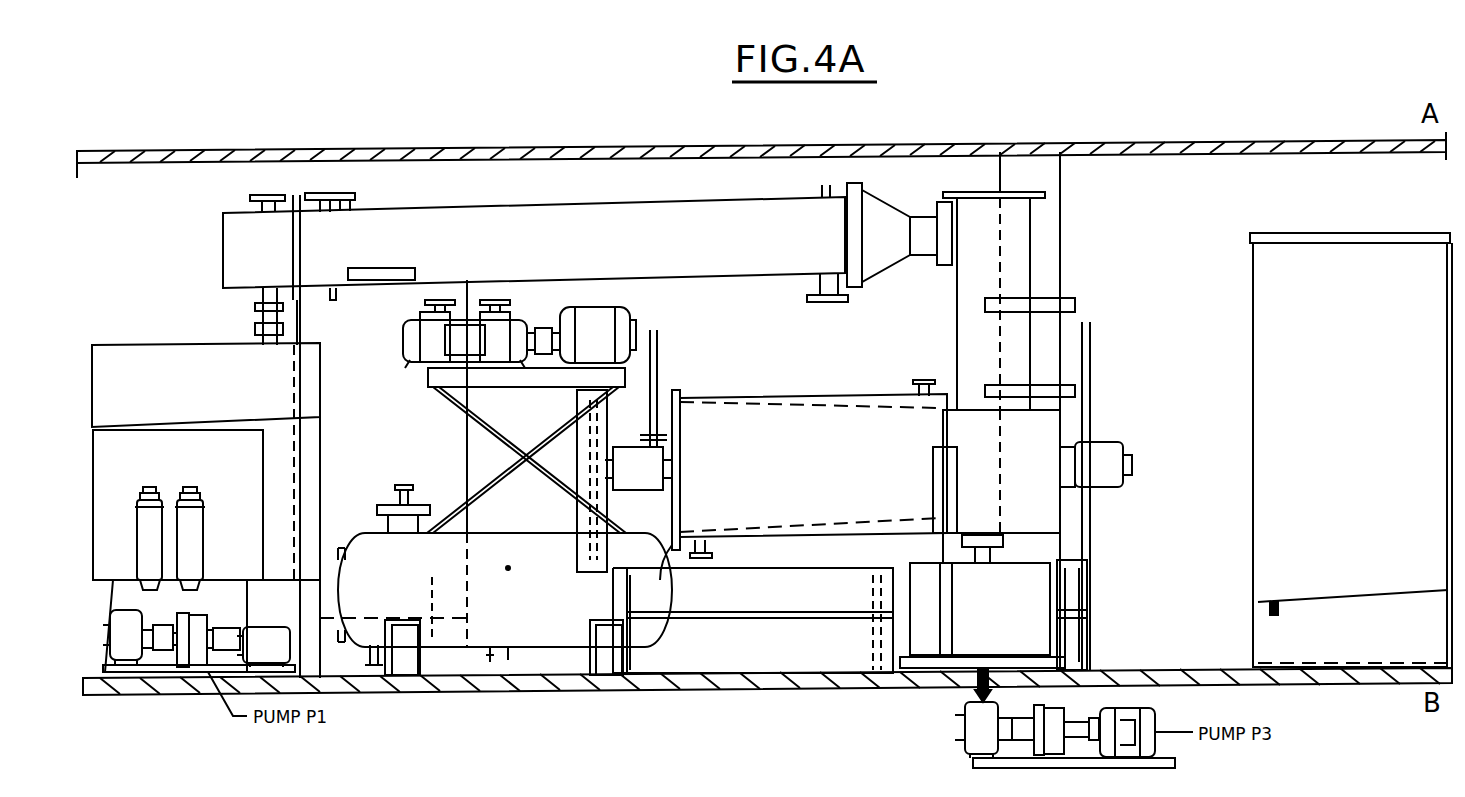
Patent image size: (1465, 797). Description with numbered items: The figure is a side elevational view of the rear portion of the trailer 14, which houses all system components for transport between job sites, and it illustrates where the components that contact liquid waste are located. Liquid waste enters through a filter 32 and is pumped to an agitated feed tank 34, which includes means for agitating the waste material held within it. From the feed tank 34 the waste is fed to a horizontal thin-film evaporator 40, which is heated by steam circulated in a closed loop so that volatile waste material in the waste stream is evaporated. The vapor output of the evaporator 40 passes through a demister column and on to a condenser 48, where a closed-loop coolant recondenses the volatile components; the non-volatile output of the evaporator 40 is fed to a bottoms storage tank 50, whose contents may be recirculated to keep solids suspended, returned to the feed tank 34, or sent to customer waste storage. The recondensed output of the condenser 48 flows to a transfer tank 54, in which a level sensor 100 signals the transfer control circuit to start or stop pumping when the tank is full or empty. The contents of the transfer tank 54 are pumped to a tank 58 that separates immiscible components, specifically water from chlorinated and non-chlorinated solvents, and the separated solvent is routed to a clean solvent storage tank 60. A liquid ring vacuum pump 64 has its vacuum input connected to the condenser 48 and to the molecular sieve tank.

The trailer 14 is at (1140, 141).
The level sensor 100 is at (1020, 150).
The condenser 48 is at (653, 208).
The transfer tank 54 is at (170, 346).
The filter 32 is at (152, 552).
The liquid ring vacuum pump 64 is at (649, 312).
The feed tank 34 is at (470, 497).
The horizontal thin-film evaporator 40 is at (818, 397).
The tank 58 is at (1030, 517).
The bottoms storage tank 50 is at (1045, 605).
The clean solvent storage tank 60 is at (1253, 290).